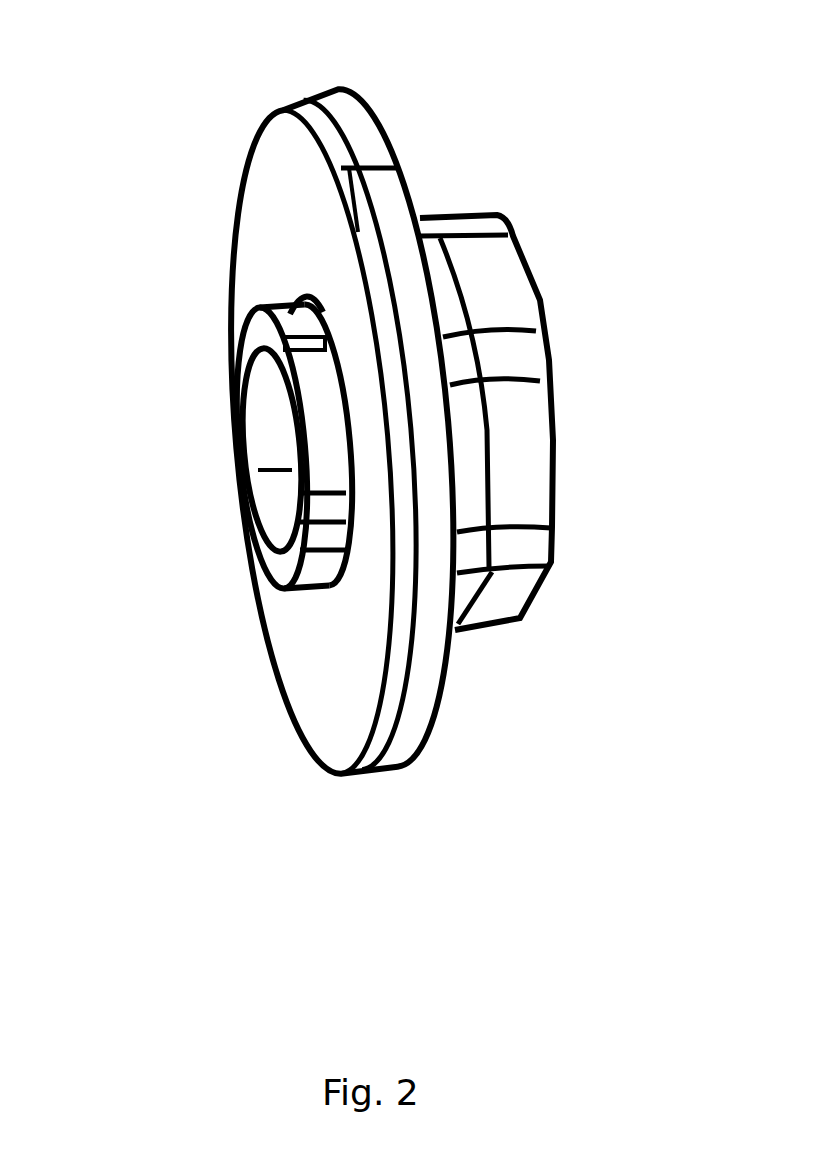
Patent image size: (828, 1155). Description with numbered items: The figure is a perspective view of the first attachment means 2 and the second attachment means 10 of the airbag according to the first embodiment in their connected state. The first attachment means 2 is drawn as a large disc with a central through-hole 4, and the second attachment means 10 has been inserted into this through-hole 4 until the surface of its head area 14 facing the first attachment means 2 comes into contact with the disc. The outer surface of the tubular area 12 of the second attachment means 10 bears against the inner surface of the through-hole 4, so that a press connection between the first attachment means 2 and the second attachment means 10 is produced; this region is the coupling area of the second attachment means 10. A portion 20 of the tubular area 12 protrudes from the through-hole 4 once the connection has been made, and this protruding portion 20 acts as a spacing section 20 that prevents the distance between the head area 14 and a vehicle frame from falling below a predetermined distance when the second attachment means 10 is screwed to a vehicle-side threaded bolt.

The first attachment means 2 is at (236, 115).
The through-hole 4 is at (300, 304).
The second attachment means 10 is at (518, 182).
The tubular area 12 is at (270, 307).
The head area 14 is at (508, 600).
The spacing section 20 is at (293, 572).